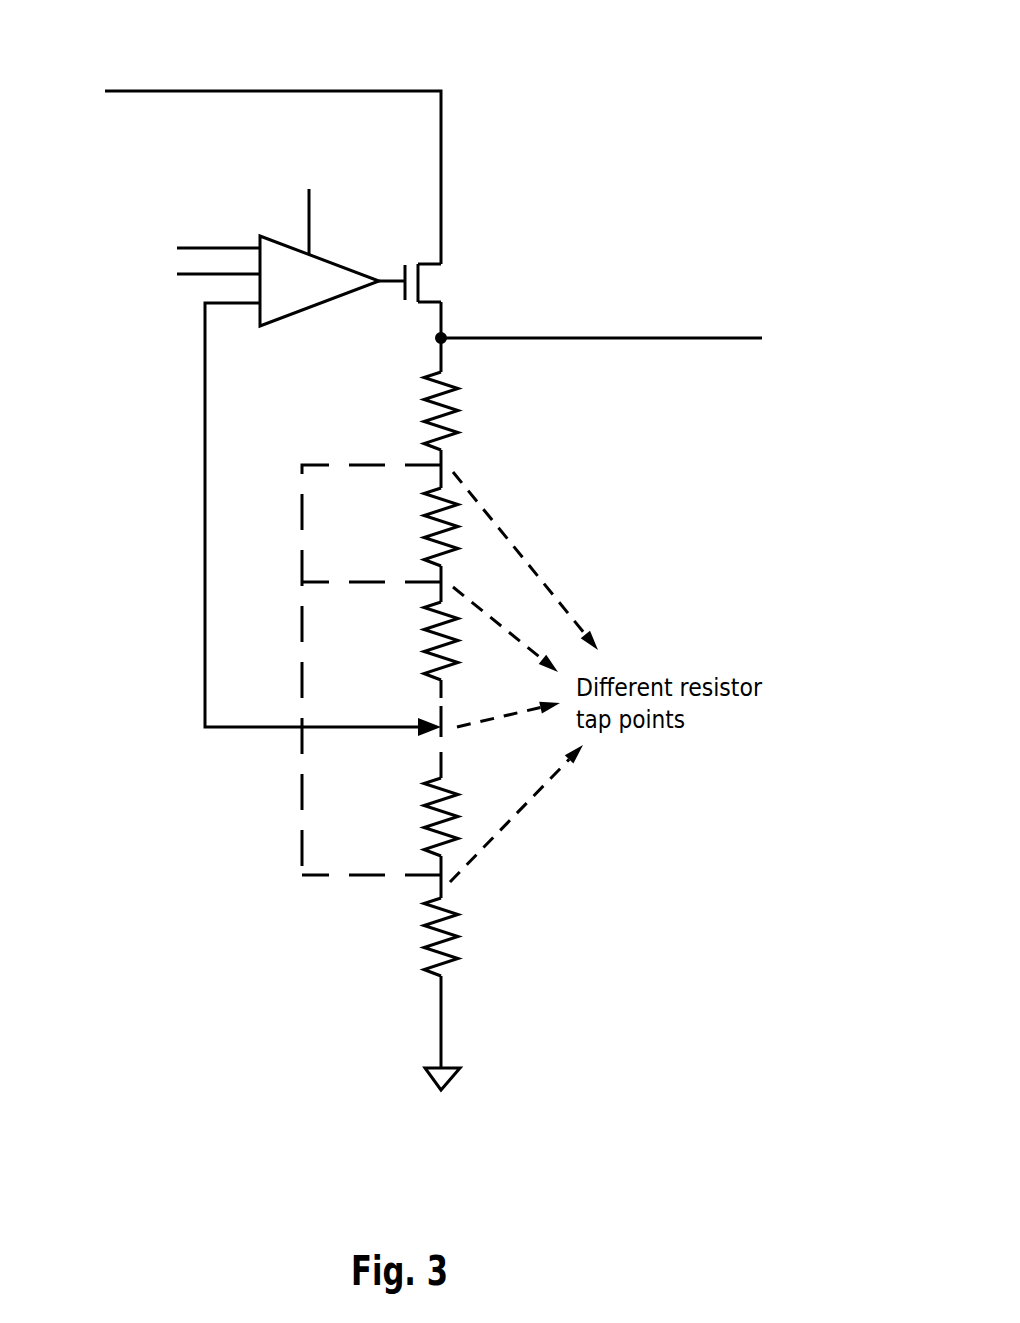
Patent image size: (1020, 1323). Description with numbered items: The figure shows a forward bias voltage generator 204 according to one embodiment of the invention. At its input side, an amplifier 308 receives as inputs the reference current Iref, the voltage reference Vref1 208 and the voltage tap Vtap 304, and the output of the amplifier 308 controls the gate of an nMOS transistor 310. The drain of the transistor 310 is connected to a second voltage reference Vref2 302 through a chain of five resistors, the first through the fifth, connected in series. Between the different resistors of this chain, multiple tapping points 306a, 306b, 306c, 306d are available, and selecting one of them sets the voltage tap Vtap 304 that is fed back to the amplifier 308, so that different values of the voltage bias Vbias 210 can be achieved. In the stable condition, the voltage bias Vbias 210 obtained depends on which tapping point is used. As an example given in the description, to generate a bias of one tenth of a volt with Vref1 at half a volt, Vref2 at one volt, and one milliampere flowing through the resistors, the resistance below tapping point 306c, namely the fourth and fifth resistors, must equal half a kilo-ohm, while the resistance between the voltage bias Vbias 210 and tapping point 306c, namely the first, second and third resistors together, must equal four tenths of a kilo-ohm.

The forward bias voltage generator 204 is at (701, 89).
The voltage reference Vref1 208 is at (200, 276).
The voltage bias Vbias 210 is at (652, 338).
The second voltage reference Vref2 302 is at (441, 1043).
The voltage tap Vtap 304 is at (205, 585).
The tapping point 306a is at (443, 465).
The tapping point 306b is at (443, 582).
The tapping point 306c is at (443, 727).
The tapping point 306d is at (443, 875).
The amplifier 308 is at (313, 253).
The nMOS transistor 310 is at (421, 284).